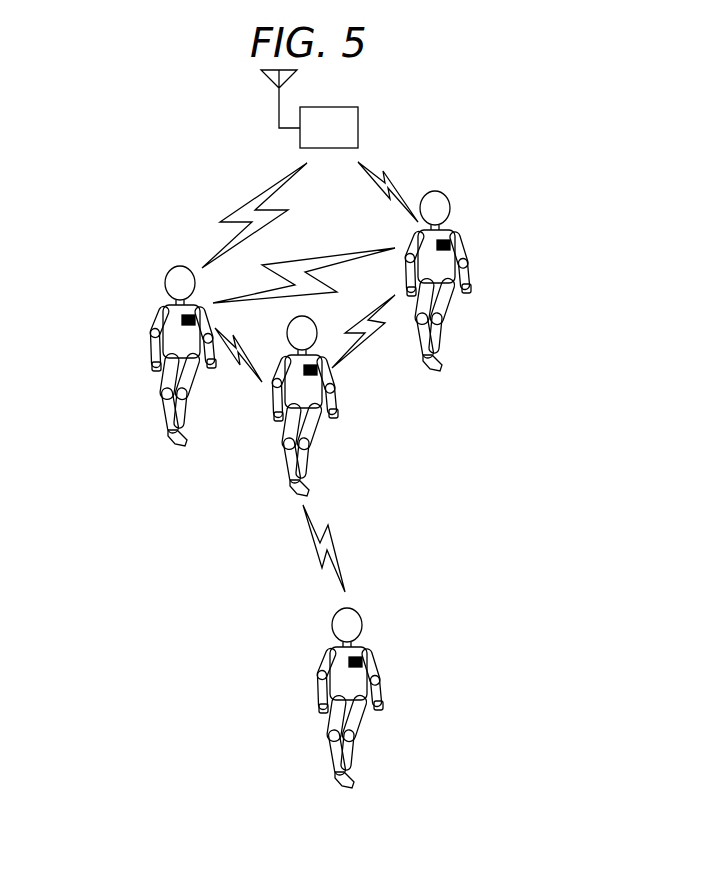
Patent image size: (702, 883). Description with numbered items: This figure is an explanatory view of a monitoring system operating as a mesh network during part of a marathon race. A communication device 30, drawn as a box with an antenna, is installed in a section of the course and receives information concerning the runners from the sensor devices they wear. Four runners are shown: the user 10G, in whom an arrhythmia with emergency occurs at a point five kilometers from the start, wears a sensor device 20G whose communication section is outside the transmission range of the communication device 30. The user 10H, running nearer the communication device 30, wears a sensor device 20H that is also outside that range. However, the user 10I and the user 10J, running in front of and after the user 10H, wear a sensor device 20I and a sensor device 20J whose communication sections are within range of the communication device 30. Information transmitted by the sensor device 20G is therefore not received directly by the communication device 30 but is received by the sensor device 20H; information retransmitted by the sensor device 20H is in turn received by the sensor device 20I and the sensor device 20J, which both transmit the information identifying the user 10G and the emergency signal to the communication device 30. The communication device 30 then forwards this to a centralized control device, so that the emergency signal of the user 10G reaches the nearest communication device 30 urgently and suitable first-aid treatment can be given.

The communication device 30 is at (358, 112).
The user 10G is at (361, 699).
The user 10H is at (357, 406).
The user 10I is at (144, 356).
The user 10J is at (473, 281).
The sensor device 20G is at (412, 646).
The sensor device 20H is at (373, 395).
The sensor device 20I is at (133, 324).
The sensor device 20J is at (489, 226).